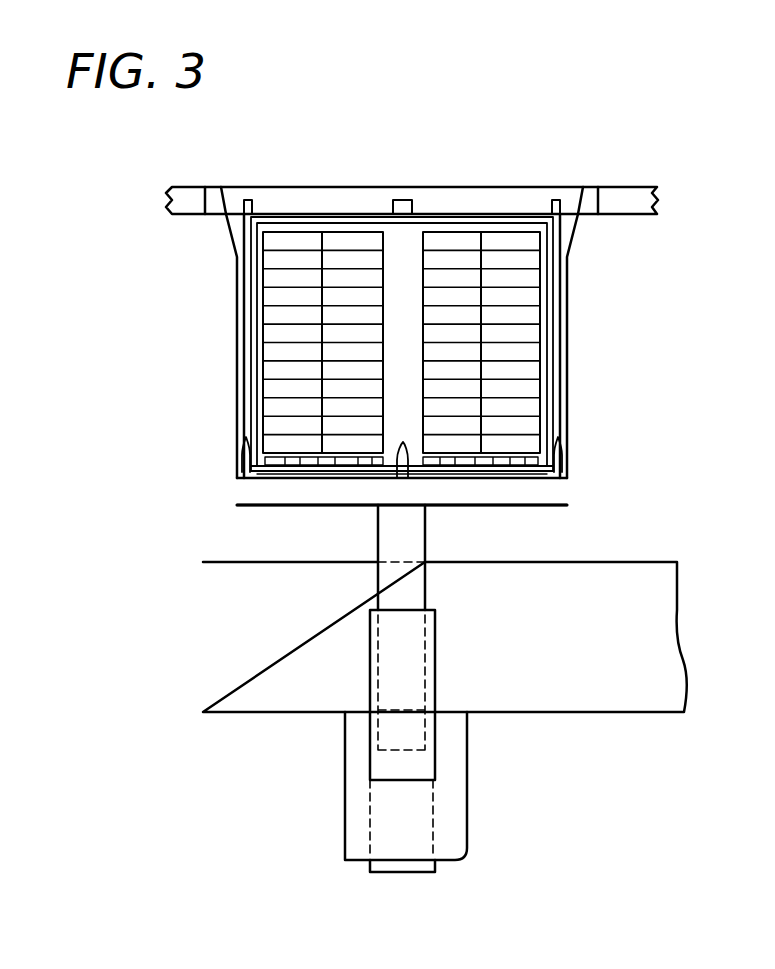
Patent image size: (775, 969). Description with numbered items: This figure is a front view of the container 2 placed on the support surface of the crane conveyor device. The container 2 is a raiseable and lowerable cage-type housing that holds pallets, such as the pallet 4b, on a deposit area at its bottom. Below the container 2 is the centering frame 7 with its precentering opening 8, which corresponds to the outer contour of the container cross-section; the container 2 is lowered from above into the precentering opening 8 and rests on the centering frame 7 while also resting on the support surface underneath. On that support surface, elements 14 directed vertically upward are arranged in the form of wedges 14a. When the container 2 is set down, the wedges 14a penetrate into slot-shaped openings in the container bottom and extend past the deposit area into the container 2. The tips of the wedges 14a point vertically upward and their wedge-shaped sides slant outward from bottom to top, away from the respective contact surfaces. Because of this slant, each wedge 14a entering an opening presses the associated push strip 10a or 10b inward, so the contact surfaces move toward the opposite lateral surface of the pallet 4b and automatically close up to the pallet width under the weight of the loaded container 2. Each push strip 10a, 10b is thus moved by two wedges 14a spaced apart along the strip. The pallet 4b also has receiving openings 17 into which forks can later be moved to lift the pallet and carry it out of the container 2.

The container 2 is at (396, 337).
The centering frame 7 is at (618, 197).
The precentering opening 8 is at (470, 204).
The pallet 4b is at (272, 468).
The push strip 10a is at (242, 483).
The push strip 10b is at (398, 506).
The element directed vertically upward 14 is at (225, 433).
The wedge 14a is at (240, 458).
The receiving opening 17 is at (331, 466).